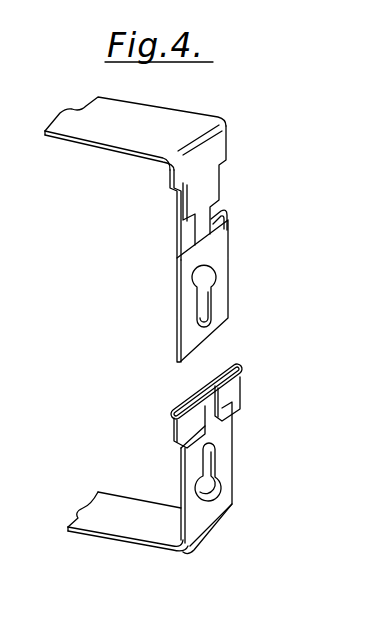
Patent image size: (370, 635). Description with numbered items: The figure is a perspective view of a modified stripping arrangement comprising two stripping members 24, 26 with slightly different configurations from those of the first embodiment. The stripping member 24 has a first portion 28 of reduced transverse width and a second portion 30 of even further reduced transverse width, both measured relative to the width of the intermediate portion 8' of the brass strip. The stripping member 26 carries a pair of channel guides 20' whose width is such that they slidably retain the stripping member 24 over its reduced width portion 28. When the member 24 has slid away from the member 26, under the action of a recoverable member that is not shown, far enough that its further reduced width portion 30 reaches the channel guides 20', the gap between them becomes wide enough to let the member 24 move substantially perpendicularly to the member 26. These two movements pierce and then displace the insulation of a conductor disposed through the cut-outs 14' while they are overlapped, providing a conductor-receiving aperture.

The intermediate portion of the brass strip 8' is at (128, 342).
The first portion of reduced transverse width 28 is at (219, 183).
The second portion of further reduced transverse width 30 is at (210, 208).
The stripping member 24 is at (175, 289).
The cut-outs 14' is at (246, 363).
The channel guides 20' is at (212, 403).
The stripping member 26 is at (232, 496).